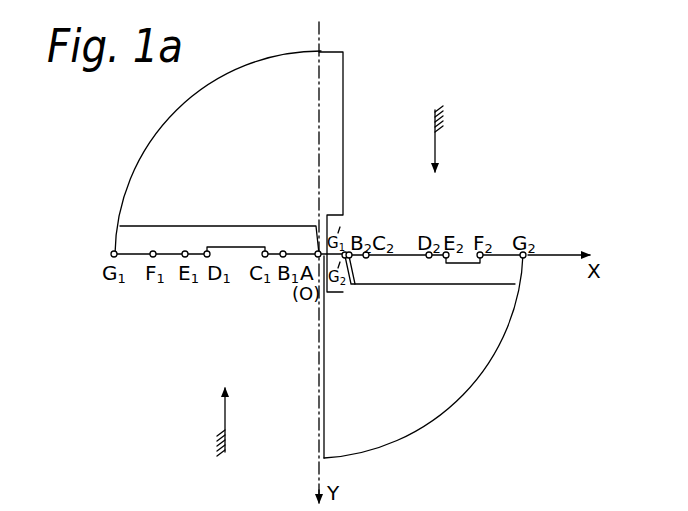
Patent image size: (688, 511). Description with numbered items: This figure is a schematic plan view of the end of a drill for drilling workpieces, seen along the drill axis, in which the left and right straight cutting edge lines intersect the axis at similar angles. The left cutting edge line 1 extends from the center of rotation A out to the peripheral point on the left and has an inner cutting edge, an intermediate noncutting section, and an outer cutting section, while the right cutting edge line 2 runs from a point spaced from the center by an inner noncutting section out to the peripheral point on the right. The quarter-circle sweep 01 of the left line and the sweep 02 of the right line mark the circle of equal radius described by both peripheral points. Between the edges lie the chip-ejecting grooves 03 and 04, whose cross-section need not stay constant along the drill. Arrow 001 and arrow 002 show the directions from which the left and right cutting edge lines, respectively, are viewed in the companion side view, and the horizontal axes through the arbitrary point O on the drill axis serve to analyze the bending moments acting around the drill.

The first member (left slide member) 1 is at (140, 240).
The second member (right slide member) 2 is at (507, 272).
The first quadrant arc (path of point G1) 01 is at (182, 148).
The second quadrant arc (path of point G2) 02 is at (443, 380).
The groove 03 is at (220, 335).
The groove 04 is at (395, 125).
The arrow 001 is at (227, 415).
The arrow 002 is at (438, 147).